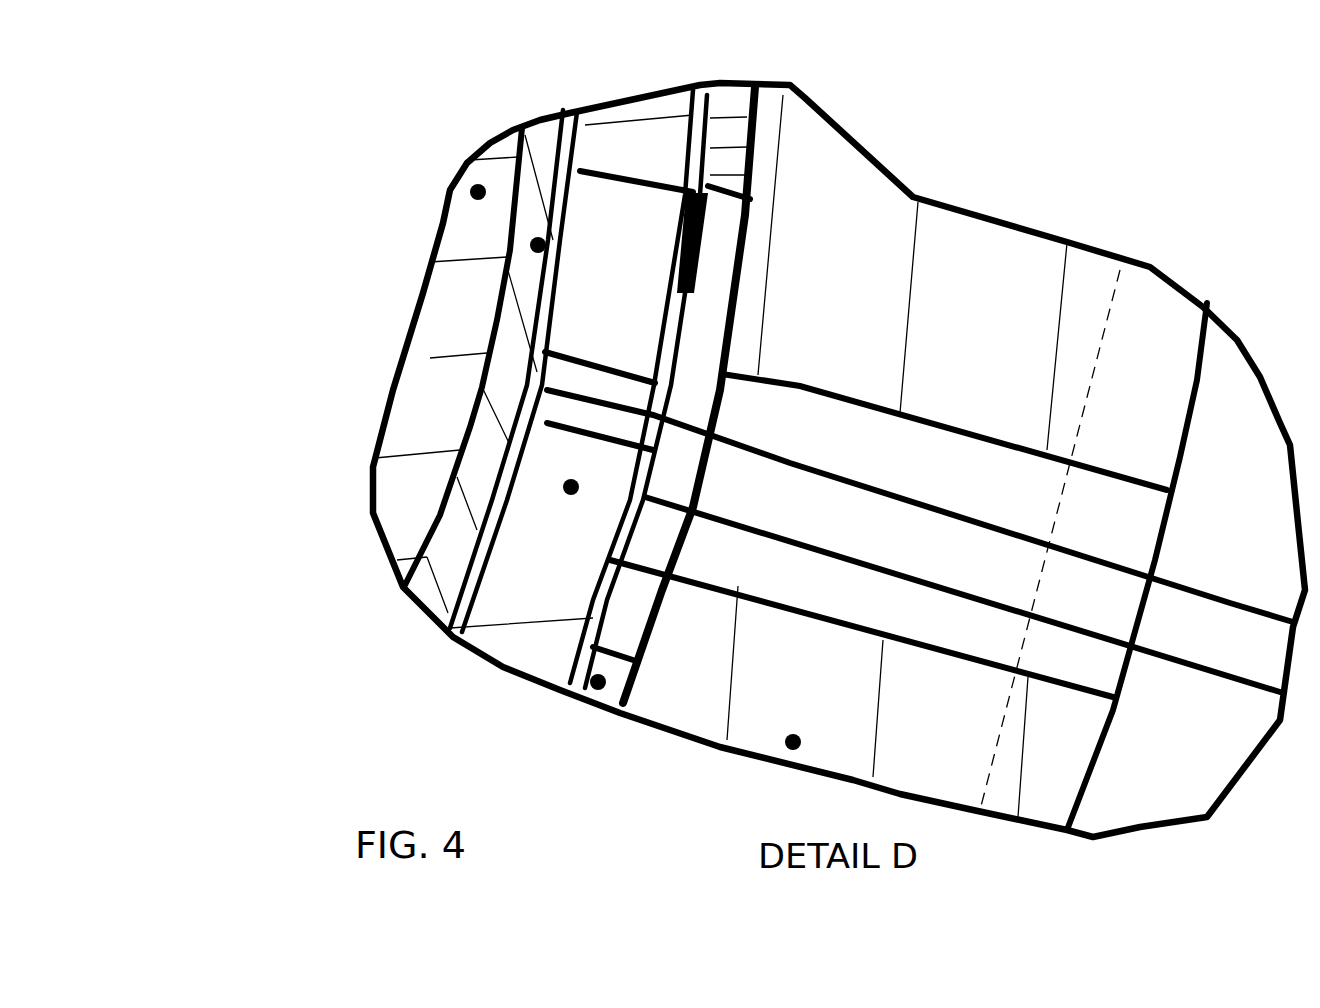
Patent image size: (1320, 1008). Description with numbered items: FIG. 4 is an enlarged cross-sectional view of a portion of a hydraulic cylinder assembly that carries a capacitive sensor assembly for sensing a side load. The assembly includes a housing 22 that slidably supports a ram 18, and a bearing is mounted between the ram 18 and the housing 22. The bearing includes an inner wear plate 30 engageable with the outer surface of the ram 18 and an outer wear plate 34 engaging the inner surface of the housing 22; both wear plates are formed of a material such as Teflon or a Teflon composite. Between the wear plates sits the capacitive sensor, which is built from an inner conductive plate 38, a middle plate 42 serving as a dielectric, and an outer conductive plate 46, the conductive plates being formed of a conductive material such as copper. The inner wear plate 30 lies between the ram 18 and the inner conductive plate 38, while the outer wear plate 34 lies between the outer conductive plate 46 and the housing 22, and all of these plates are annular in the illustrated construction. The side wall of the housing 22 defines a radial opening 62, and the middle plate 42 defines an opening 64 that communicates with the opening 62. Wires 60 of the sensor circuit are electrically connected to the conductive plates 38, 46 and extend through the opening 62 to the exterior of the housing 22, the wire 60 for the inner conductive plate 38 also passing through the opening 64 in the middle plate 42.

The ram 18 is at (478, 192).
The housing 22 is at (793, 742).
The inner wear plate 30 is at (538, 245).
The outer wear plate 34 is at (598, 682).
The inner conductive plate 38 is at (537, 297).
The middle plate 42 is at (571, 487).
The outer conductive plate 46 is at (612, 569).
The wires 60 is at (1182, 590).
The radial opening 62 is at (1000, 493).
The opening 64 is at (633, 385).